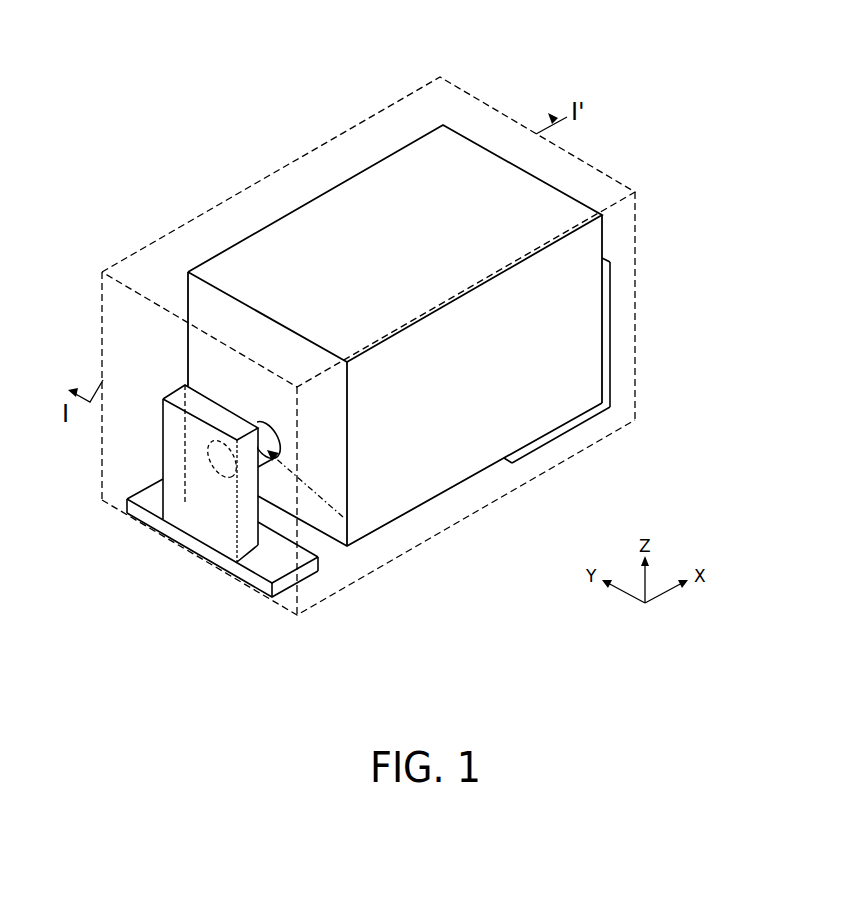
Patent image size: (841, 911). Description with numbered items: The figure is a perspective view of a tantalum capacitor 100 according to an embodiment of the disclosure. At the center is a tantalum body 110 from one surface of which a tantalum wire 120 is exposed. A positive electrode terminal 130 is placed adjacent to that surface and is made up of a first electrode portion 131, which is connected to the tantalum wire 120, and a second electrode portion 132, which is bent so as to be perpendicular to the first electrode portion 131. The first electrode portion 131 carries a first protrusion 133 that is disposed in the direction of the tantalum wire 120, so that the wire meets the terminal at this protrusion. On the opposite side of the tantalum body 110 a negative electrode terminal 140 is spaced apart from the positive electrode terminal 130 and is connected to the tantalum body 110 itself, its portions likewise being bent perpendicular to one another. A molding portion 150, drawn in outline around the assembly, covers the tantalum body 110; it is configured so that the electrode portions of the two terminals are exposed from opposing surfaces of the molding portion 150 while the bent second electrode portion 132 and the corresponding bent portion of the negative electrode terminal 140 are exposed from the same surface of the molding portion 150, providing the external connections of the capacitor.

The tantalum capacitor 100 is at (217, 21).
The tantalum body 110 is at (352, 218).
The tantalum wire 120 is at (350, 524).
The positive electrode terminal 130 is at (255, 529).
The first electrode portion 131 is at (223, 542).
The second electrode portion 132 is at (317, 578).
The first protrusion 133 is at (208, 457).
The negative electrode terminal 140 is at (583, 413).
The molding portion 150 is at (459, 84).